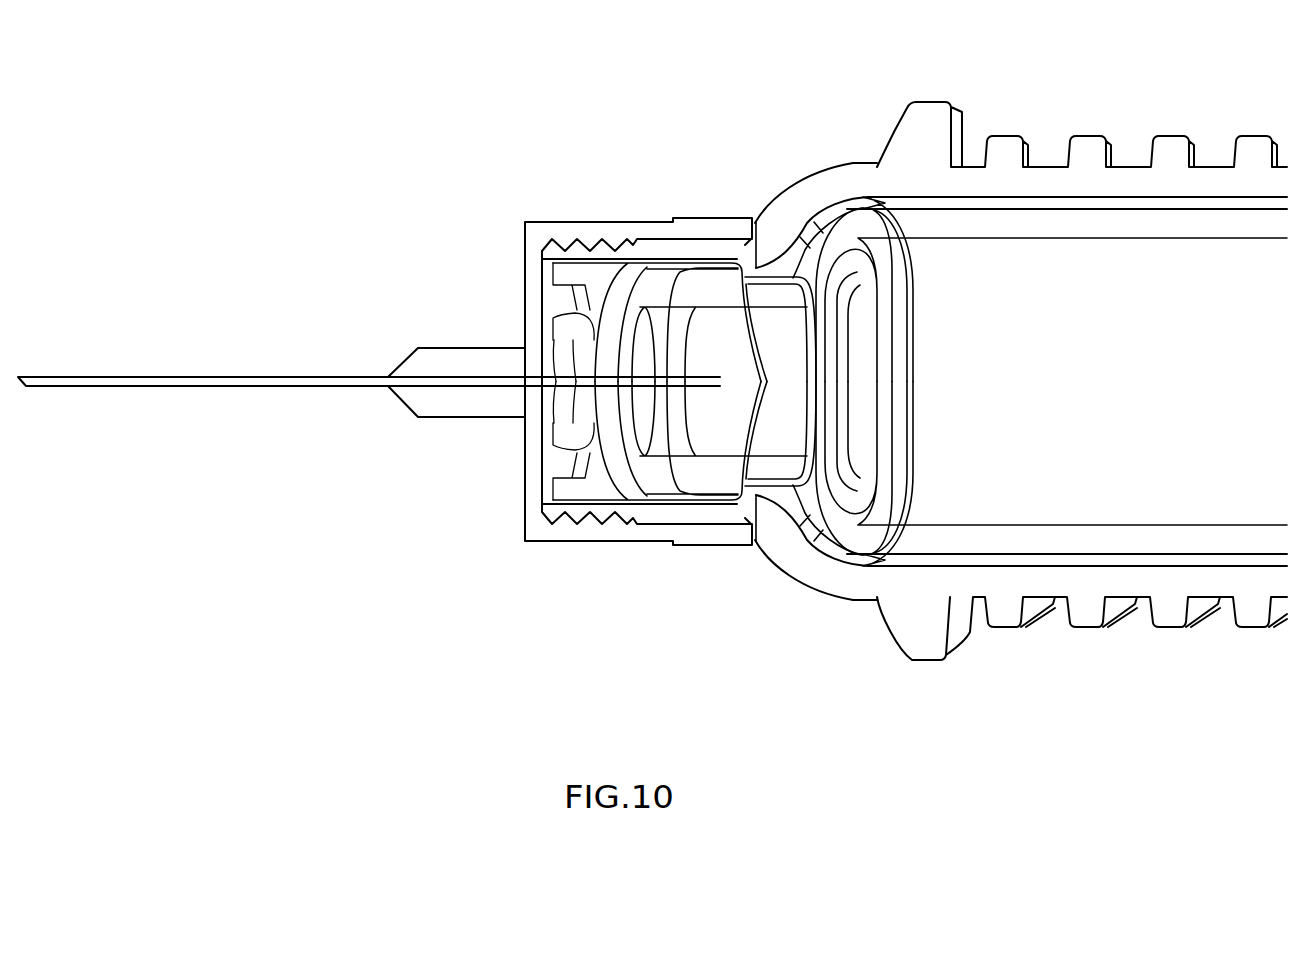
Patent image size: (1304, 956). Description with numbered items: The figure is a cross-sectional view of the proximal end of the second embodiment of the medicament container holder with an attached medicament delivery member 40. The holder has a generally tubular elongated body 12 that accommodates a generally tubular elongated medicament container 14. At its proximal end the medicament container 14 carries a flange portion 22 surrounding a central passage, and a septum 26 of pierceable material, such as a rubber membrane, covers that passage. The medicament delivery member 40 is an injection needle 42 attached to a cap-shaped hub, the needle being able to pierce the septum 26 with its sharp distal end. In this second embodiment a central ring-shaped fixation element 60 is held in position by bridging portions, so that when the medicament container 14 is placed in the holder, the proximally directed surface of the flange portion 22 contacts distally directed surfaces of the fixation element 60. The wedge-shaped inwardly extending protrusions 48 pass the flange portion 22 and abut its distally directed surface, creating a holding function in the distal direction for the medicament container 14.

The tubular elongated body 12 is at (1045, 177).
The medicament container 14 is at (1110, 265).
The flange portion 22 is at (678, 283).
The septum 26 is at (624, 485).
The medicament delivery member 40 is at (497, 176).
The injection needle 42 is at (232, 377).
The wedge-shaped inwardly extending protrusions 48 is at (745, 265).
The fixation element 60 is at (522, 302).